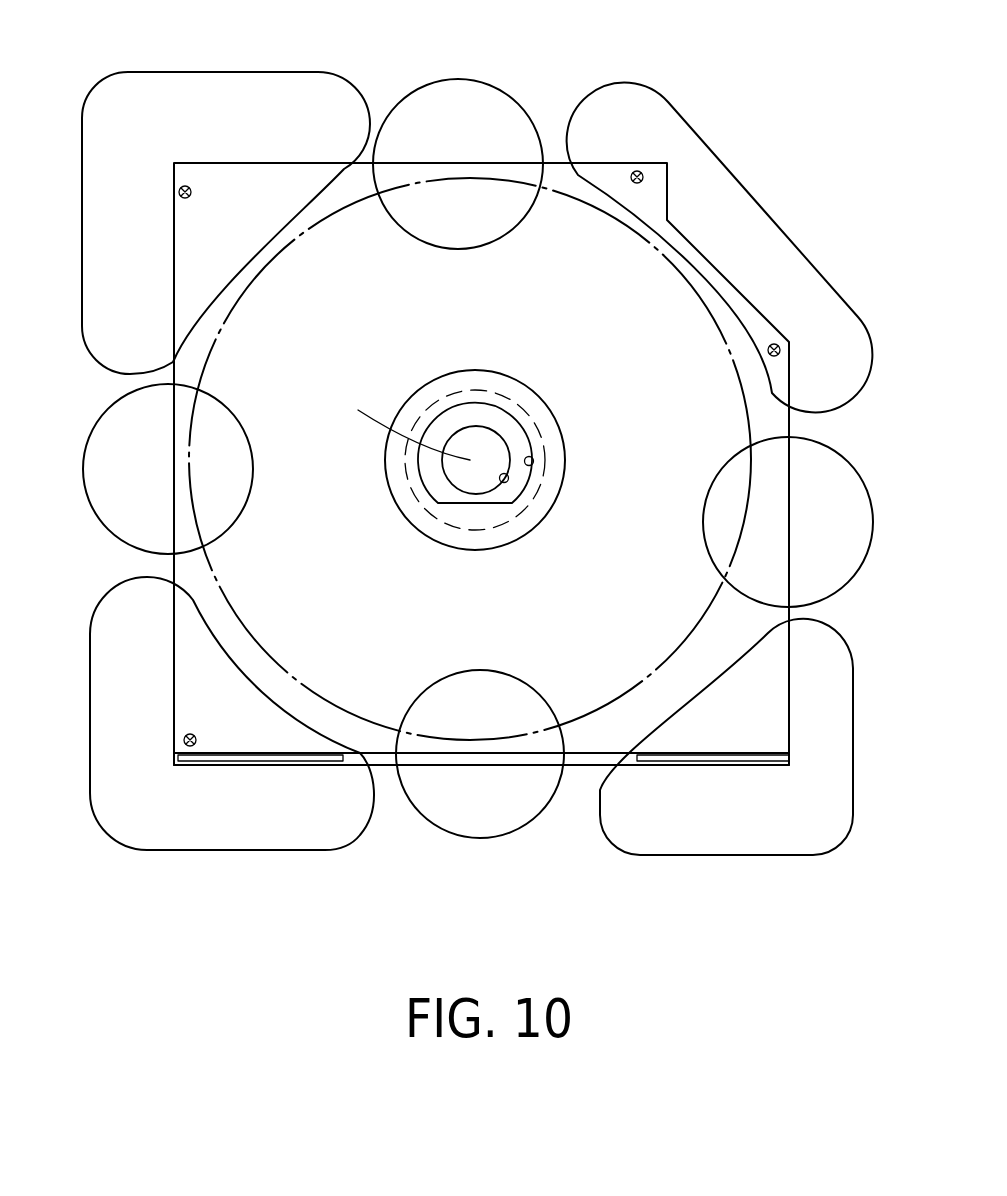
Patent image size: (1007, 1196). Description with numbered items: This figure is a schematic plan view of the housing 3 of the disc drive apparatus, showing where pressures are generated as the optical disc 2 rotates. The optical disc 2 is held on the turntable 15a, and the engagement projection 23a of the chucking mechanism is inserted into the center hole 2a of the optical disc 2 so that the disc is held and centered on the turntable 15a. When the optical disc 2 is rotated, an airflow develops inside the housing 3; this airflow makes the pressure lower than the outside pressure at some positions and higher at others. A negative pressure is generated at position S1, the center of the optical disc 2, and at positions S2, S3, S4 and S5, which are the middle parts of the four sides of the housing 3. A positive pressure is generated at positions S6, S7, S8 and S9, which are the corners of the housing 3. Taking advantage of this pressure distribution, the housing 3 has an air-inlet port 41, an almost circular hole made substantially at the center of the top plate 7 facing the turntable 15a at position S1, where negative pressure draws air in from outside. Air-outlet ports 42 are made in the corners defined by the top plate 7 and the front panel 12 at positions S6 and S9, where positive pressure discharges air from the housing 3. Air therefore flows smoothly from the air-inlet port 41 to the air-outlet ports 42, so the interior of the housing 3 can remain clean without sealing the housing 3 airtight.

The optical disc 2 is at (387, 727).
The center hole 2a is at (507, 483).
The housing 3 is at (549, 110).
The top plate 7 is at (792, 425).
The front panel 12 is at (578, 770).
The turntable 15a is at (552, 418).
The engagement projection 23a is at (491, 435).
The air-inlet port 41 is at (533, 463).
The air-outlet ports 42 is at (258, 757).
The position S1 is at (478, 371).
The position S2 is at (483, 838).
The position S3 is at (82, 462).
The position S4 is at (459, 79).
The position S5 is at (874, 524).
The position S6 is at (90, 723).
The position S7 is at (78, 200).
The position S8 is at (782, 227).
The position S9 is at (853, 763).